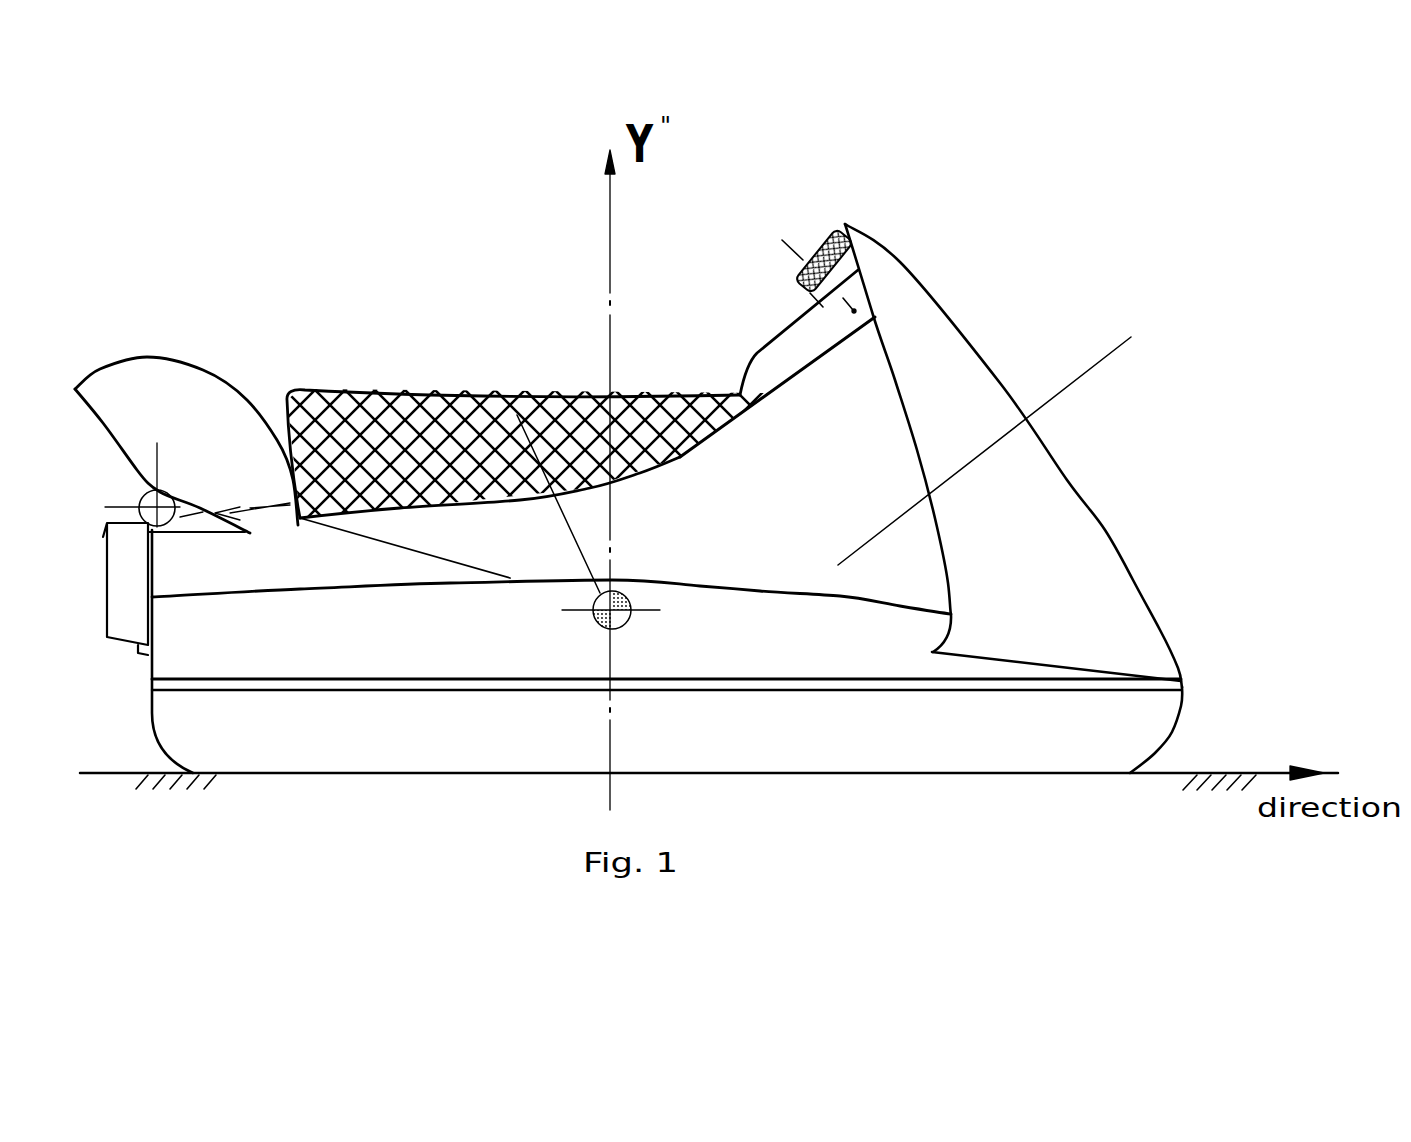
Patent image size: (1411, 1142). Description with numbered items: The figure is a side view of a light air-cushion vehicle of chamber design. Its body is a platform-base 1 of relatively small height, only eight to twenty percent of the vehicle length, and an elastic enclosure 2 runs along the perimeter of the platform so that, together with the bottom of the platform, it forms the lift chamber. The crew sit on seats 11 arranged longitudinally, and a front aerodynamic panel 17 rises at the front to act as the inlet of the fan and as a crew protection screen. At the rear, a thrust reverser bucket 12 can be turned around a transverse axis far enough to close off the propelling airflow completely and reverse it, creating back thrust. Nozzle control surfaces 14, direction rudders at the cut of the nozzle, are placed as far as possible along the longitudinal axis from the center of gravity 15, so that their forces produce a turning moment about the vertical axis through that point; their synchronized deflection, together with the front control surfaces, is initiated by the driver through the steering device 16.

The platform-base 1 is at (910, 652).
The elastic enclosure 2 is at (1160, 727).
The seats 11 is at (517, 415).
The thrust reverser bucket 12 is at (130, 383).
The nozzle control surfaces 14 is at (120, 582).
The center of gravity 15 is at (517, 415).
The steering device 16 is at (845, 224).
The front aerodynamic panel 17 is at (1100, 357).